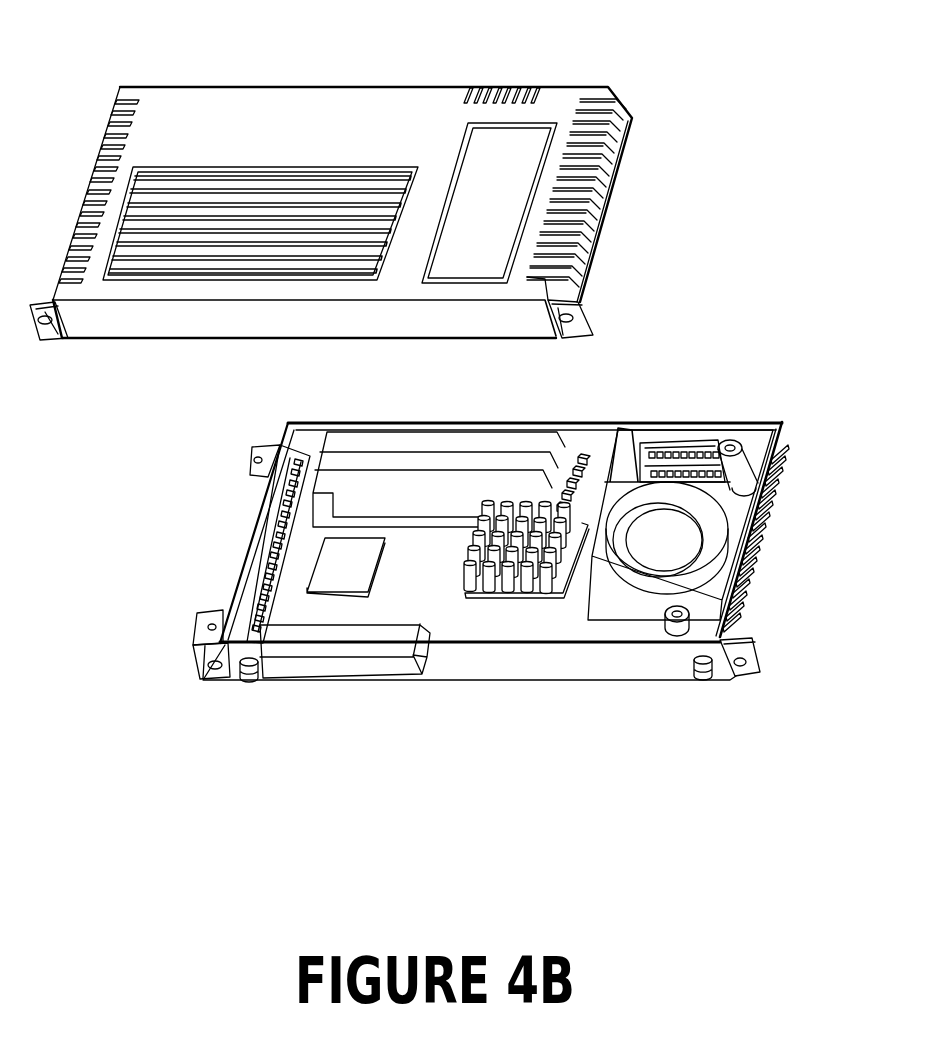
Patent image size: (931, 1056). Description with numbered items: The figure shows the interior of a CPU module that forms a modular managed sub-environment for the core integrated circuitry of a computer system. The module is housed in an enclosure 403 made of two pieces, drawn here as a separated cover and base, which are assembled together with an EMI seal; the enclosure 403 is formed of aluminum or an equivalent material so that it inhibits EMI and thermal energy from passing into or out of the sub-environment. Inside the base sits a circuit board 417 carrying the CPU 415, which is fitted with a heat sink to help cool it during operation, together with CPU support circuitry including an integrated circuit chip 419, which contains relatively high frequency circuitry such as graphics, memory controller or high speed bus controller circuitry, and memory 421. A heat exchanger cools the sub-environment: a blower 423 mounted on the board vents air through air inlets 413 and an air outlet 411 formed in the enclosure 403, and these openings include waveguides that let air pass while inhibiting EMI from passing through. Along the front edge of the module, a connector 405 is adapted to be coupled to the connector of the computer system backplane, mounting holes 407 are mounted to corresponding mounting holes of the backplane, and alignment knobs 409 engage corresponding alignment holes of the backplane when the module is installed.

The enclosure 403 is at (632, 118).
The connector 405 is at (338, 680).
The mounting holes 407 is at (200, 677).
The alignment knobs 409 is at (255, 680).
The air outlet 411 is at (97, 167).
The air inlets 413 is at (533, 87).
The CPU 415 is at (513, 598).
The circuit board 417 is at (293, 607).
The integrated circuit chip 419 is at (315, 563).
The memory 421 is at (315, 450).
The blower 423 is at (720, 533).